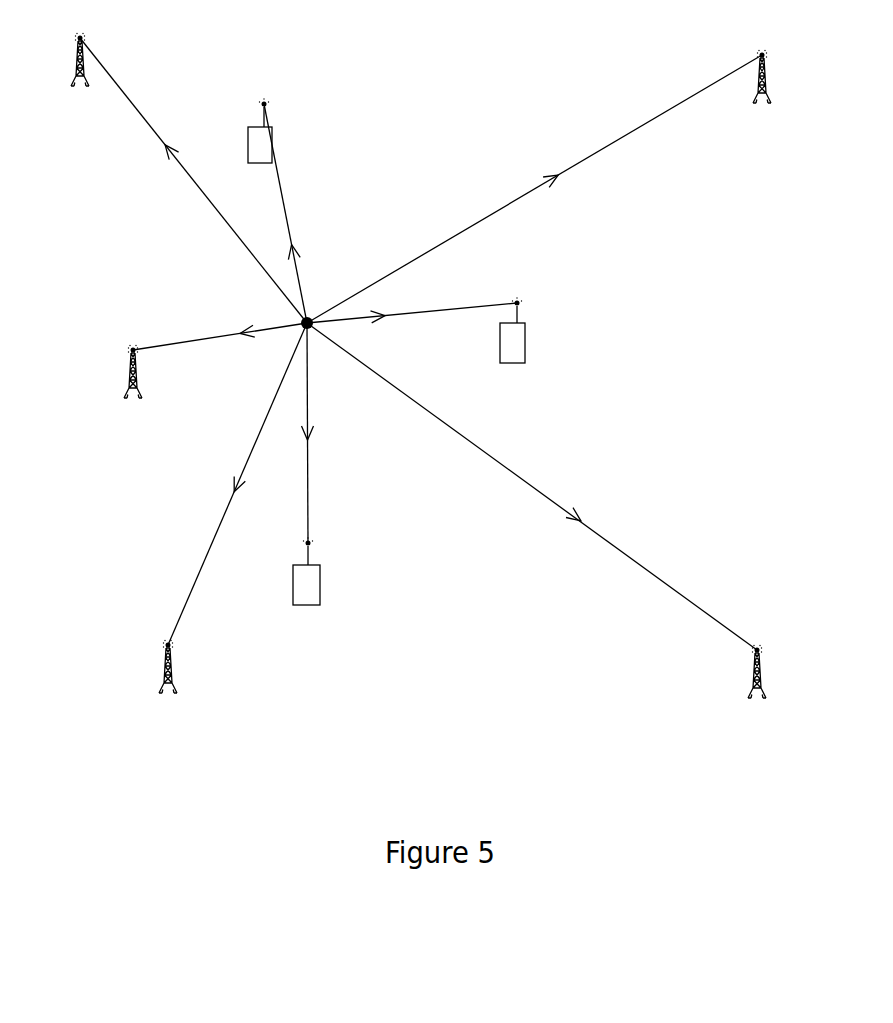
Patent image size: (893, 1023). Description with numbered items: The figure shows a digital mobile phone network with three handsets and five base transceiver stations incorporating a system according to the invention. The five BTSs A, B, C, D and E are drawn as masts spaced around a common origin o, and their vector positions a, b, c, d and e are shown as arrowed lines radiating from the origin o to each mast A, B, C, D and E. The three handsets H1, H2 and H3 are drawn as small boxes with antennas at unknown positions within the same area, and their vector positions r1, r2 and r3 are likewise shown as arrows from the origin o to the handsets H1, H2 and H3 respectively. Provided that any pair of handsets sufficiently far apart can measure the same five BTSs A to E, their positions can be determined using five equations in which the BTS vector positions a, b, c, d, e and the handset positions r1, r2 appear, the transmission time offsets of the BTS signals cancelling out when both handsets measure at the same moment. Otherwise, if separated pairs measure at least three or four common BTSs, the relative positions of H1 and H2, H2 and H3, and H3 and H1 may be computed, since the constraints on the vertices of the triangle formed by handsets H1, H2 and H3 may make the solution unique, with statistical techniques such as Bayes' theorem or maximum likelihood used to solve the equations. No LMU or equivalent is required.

The origin / mobile station position o is at (315, 307).
The BTS A is at (777, 66).
The BTS B is at (776, 674).
The BTS C is at (140, 677).
The BTS D is at (108, 374).
The BTS E is at (60, 60).
The first handset H1 is at (239, 123).
The second handset H2 is at (539, 334).
The third handset H3 is at (329, 583).
The vector position of BTS A a is at (534, 189).
The vector position of BTS B b is at (532, 486).
The vector position of BTS C c is at (237, 484).
The vector position of BTS D d is at (220, 323).
The vector position of BTS E e is at (193, 180).
The vector position of first handset r1 is at (291, 213).
The vector position of second handset r2 is at (412, 300).
The vector to handset H3 r3 is at (326, 433).